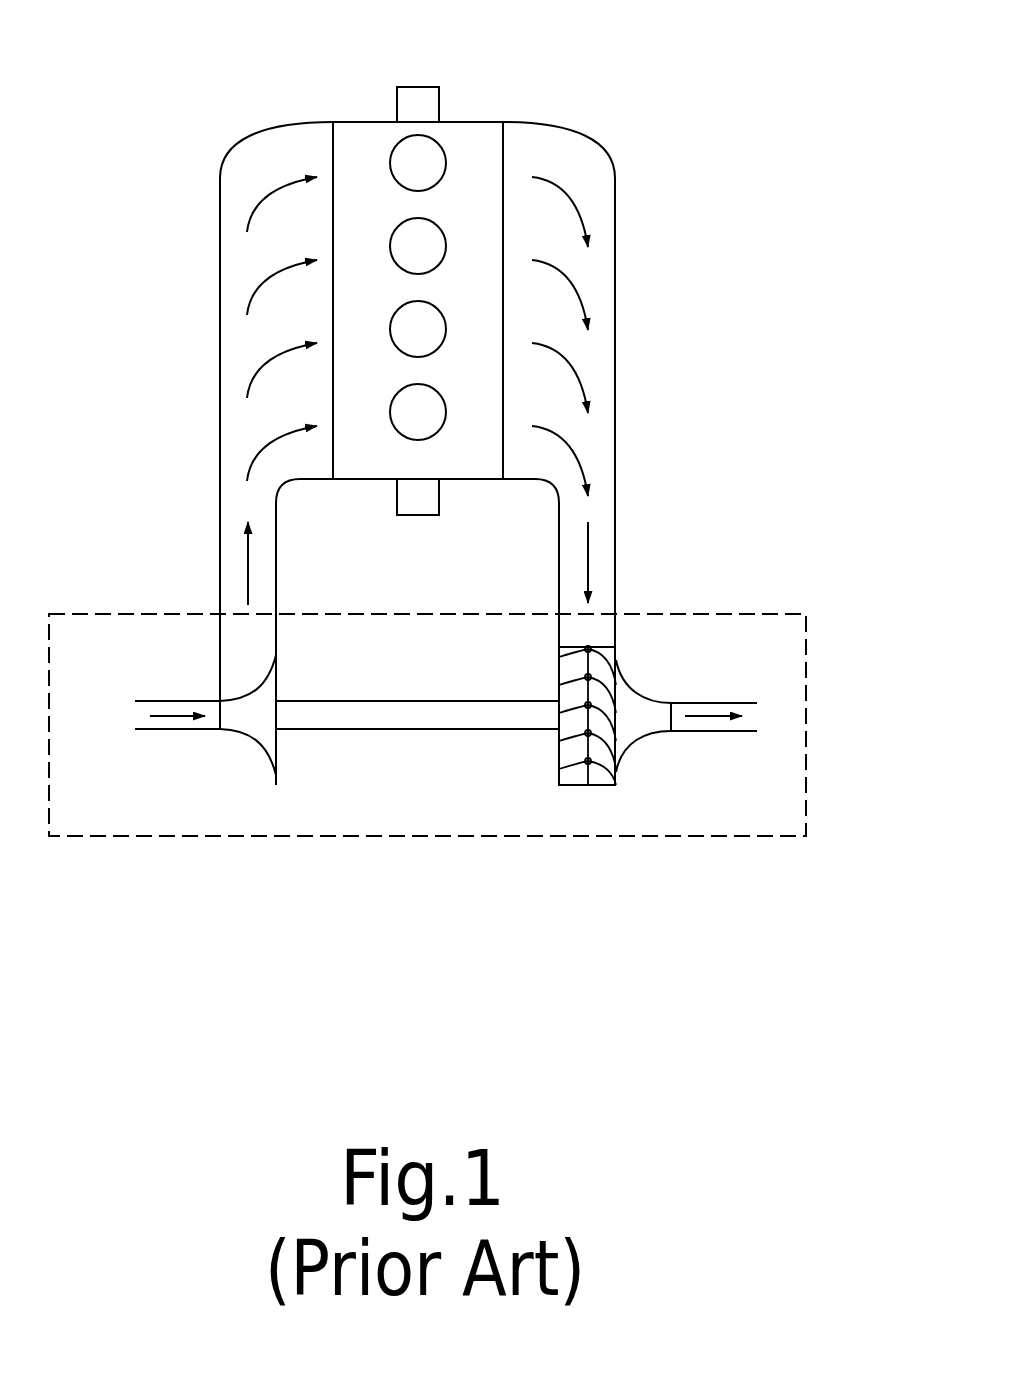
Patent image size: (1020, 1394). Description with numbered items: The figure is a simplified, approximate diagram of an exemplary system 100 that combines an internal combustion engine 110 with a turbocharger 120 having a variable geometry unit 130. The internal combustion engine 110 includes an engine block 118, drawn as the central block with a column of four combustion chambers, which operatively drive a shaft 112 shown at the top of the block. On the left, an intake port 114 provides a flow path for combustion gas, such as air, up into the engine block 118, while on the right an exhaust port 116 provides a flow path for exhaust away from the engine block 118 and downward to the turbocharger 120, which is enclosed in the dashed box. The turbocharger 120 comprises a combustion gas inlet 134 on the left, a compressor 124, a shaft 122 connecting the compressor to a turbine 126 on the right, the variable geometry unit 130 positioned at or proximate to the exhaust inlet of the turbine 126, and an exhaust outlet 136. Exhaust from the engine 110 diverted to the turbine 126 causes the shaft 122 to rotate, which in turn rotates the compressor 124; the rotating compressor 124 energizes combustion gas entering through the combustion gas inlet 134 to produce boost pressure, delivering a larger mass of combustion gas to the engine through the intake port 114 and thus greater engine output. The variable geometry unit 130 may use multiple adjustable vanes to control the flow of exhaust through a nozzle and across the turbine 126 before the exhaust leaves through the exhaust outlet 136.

The system 100 is at (603, 50).
The internal combustion engine 110 is at (373, 120).
The shaft 112 is at (417, 87).
The intake port 114 is at (242, 143).
The exhaust port 116 is at (593, 143).
The engine block 118 is at (440, 475).
The turbocharger 120 is at (675, 614).
The shaft 122 is at (330, 729).
The compressor 124 is at (278, 677).
The turbine 126 is at (625, 675).
The variable geometry unit 130 is at (559, 675).
The combustion gas inlet 134 is at (172, 701).
The exhaust outlet 136 is at (702, 703).